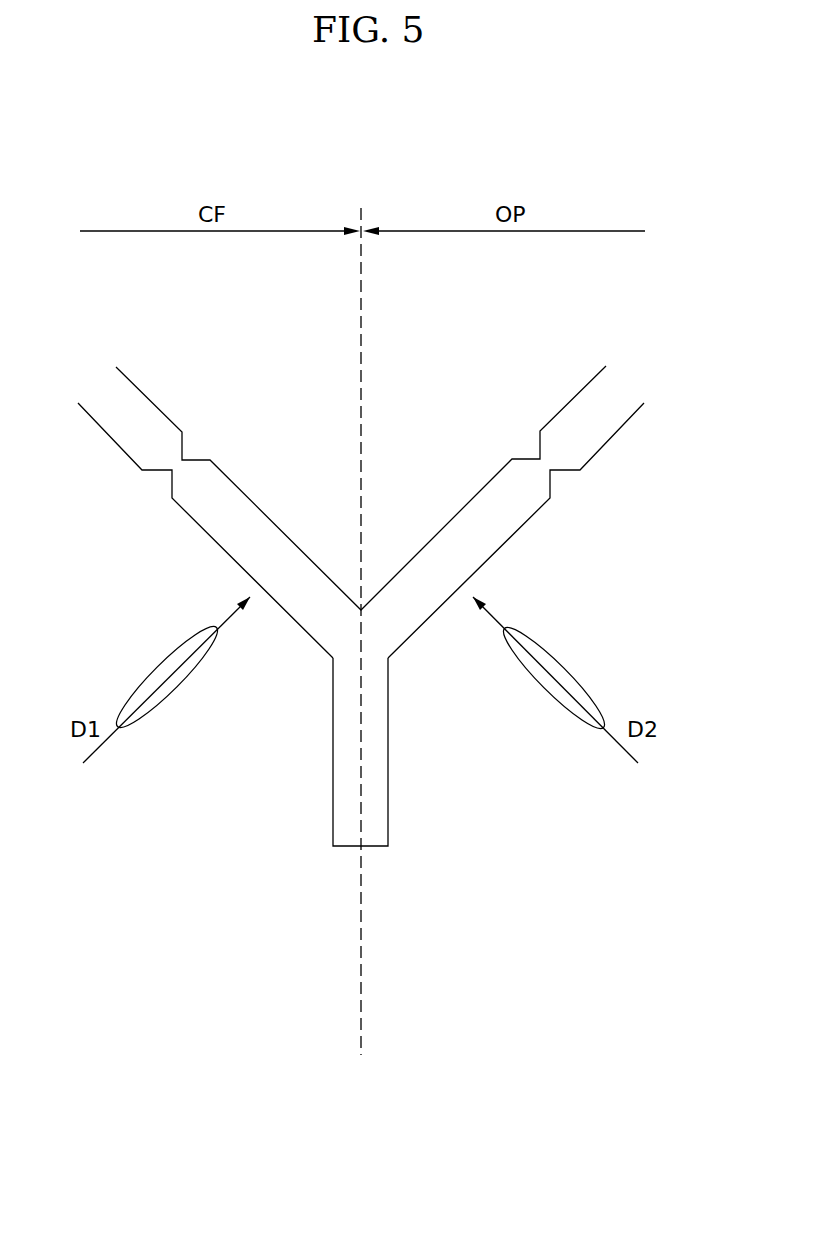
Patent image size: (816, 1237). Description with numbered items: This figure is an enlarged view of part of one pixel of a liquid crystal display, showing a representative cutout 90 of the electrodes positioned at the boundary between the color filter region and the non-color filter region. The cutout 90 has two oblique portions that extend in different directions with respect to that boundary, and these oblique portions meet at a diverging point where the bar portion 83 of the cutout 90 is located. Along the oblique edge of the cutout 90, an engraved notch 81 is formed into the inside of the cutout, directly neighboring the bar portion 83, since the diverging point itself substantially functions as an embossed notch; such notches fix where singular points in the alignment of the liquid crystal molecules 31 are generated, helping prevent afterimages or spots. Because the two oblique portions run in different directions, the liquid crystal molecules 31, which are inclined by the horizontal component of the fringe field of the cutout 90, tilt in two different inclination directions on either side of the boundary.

The engraved notch 81 is at (183, 445).
The cutout 90 is at (612, 438).
The bar portion 83 is at (388, 750).
The liquid crystal molecules 31 is at (562, 663).